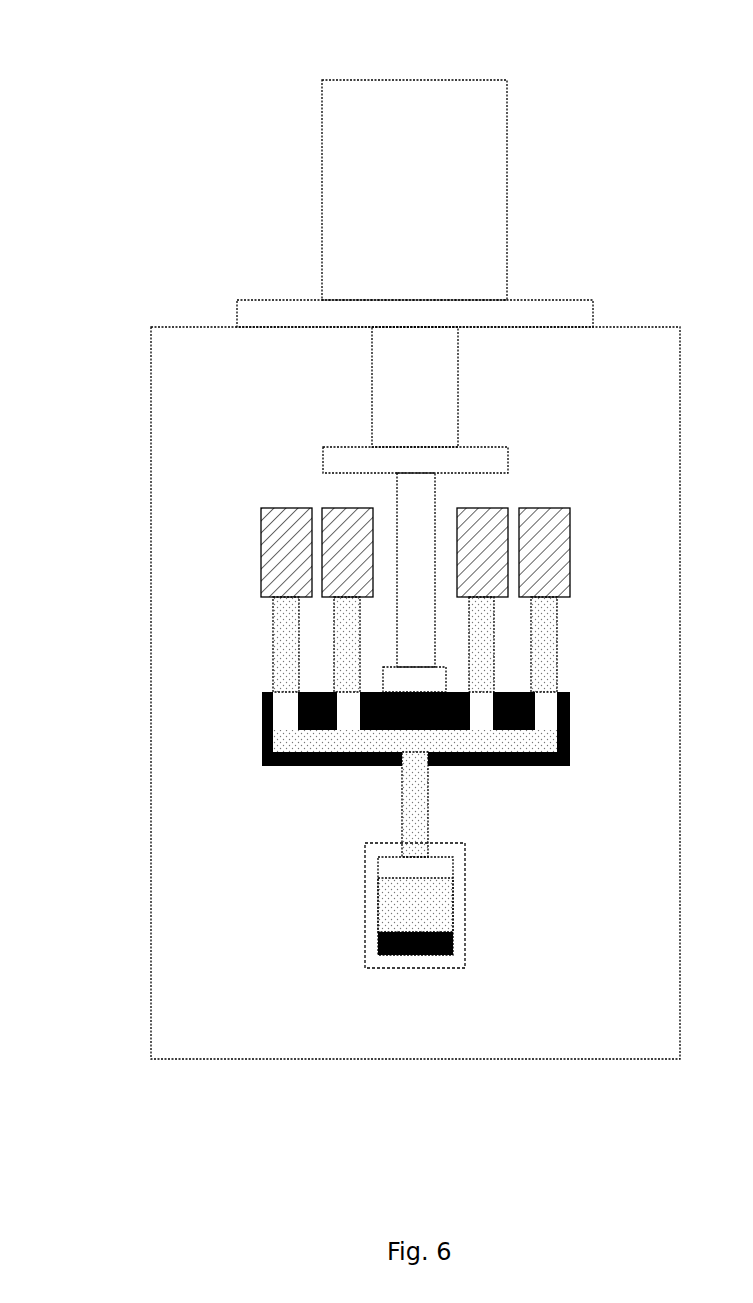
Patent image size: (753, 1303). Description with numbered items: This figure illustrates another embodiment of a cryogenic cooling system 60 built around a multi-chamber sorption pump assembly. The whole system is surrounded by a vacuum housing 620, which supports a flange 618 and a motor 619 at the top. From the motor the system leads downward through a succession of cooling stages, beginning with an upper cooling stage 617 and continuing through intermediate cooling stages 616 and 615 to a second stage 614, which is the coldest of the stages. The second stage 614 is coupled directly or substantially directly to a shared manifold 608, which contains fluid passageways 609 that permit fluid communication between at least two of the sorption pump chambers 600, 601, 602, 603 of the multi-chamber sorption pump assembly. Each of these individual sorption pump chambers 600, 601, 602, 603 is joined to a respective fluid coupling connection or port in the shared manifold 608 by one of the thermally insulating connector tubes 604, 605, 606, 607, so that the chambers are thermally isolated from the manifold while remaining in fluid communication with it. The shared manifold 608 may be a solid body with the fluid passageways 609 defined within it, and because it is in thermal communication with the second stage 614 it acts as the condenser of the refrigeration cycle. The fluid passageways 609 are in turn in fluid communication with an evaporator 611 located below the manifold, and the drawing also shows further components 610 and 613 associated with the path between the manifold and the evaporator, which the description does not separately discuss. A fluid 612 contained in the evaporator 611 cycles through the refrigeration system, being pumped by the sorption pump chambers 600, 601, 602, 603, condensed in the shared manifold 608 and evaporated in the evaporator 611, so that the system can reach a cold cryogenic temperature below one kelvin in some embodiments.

The cryogenic cooling system 60 is at (133, 75).
The sorption pump chamber 600 is at (278, 510).
The sorption pump chamber 601 is at (348, 510).
The sorption pump chamber 602 is at (502, 510).
The sorption pump chamber 603 is at (570, 535).
The thermally insulating connector tube 604 is at (273, 632).
The thermally insulating connector tube 605 is at (334, 650).
The thermally insulating connector tube 606 is at (494, 655).
The thermally insulating connector tube 607 is at (557, 655).
The shared manifold 608 is at (570, 728).
The fluid passageways 609 is at (444, 760).
The outlet tube 610 is at (428, 822).
The evaporator 611 is at (465, 886).
The fluid 612 is at (380, 903).
The vessel base 613 is at (378, 948).
The second stage 614 is at (446, 678).
The cooling stage 615 is at (435, 508).
The cooling stage 616 is at (508, 462).
The cooling stage 617 is at (458, 393).
The flange 618 is at (572, 299).
The motor 619 is at (507, 277).
The vacuum housing 620 is at (680, 398).